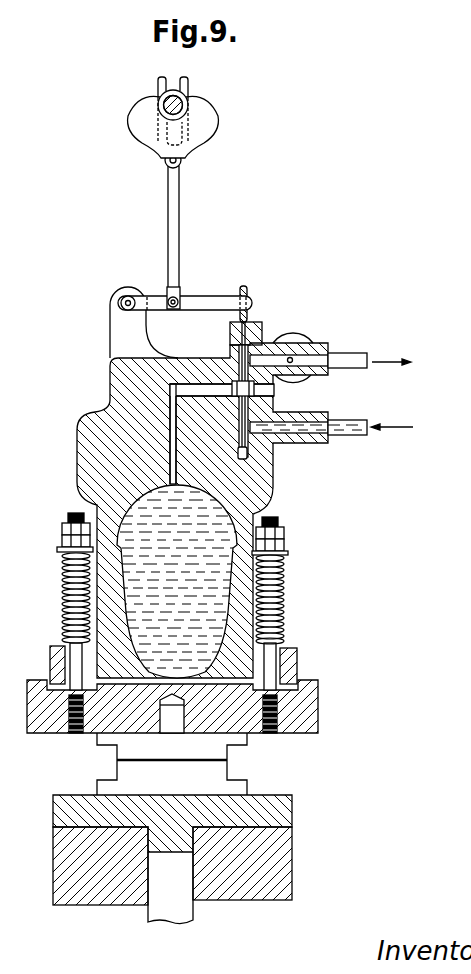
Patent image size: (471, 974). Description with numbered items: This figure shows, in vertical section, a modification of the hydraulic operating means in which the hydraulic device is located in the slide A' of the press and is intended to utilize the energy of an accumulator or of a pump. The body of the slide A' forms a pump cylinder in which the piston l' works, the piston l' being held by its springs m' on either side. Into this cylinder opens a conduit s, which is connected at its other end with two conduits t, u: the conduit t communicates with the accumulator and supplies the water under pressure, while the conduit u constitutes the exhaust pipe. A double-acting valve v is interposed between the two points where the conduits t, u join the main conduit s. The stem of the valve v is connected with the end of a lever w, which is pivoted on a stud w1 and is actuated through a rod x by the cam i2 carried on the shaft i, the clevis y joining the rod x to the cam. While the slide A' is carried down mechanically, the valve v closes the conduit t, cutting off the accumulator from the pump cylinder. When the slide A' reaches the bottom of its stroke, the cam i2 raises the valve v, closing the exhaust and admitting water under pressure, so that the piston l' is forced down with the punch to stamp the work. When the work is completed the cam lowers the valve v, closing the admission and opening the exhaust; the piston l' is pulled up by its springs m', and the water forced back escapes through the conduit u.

The shaft i is at (174, 98).
The clevis y is at (191, 82).
The cam i2 is at (205, 126).
The rod x is at (176, 219).
The lever w is at (203, 297).
The stud w1 is at (120, 303).
The slide A' is at (181, 482).
The conduit s is at (170, 447).
The double-acting valve v is at (275, 392).
The exhaust pipe u is at (349, 358).
The conduit t is at (350, 436).
The piston l' is at (177, 581).
The springs m' is at (173, 623).